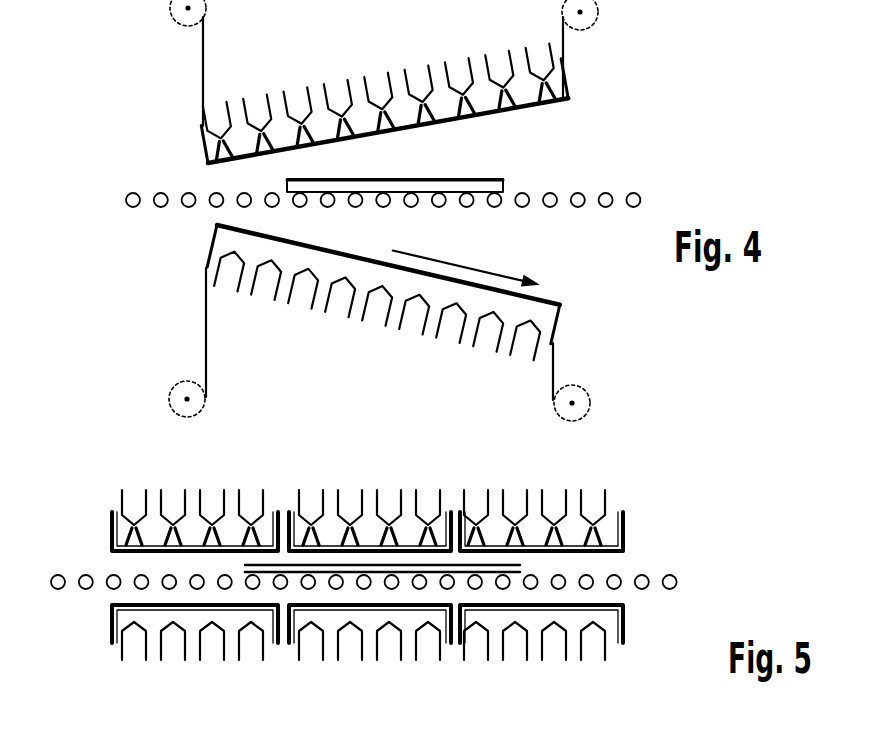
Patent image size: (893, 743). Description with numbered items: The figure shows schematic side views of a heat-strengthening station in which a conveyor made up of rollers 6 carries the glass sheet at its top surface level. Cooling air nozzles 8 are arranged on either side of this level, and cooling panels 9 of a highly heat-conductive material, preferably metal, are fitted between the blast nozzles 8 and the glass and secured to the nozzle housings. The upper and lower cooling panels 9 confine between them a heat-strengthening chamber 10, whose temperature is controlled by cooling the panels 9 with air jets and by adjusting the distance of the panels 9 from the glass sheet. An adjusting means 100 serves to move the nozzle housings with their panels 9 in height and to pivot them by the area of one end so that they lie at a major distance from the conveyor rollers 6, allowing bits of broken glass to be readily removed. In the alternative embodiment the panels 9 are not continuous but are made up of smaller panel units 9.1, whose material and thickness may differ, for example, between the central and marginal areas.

In FIG. 4, the rollers 6 is at (577, 193).
In FIG. 5, the rollers 6 is at (645, 590).
In FIG. 4, the cooling air nozzles 8 is at (340, 84).
In FIG. 5, the cooling air nozzles 8 is at (350, 506).
In FIG. 4, the cooling panels 9 is at (500, 111).
In FIG. 5, the panel units 9.1 is at (120, 556).
In FIG. 5, the heat-strengthening chamber 10 is at (153, 563).
In FIG. 4, the adjusting means 100 is at (170, 25).